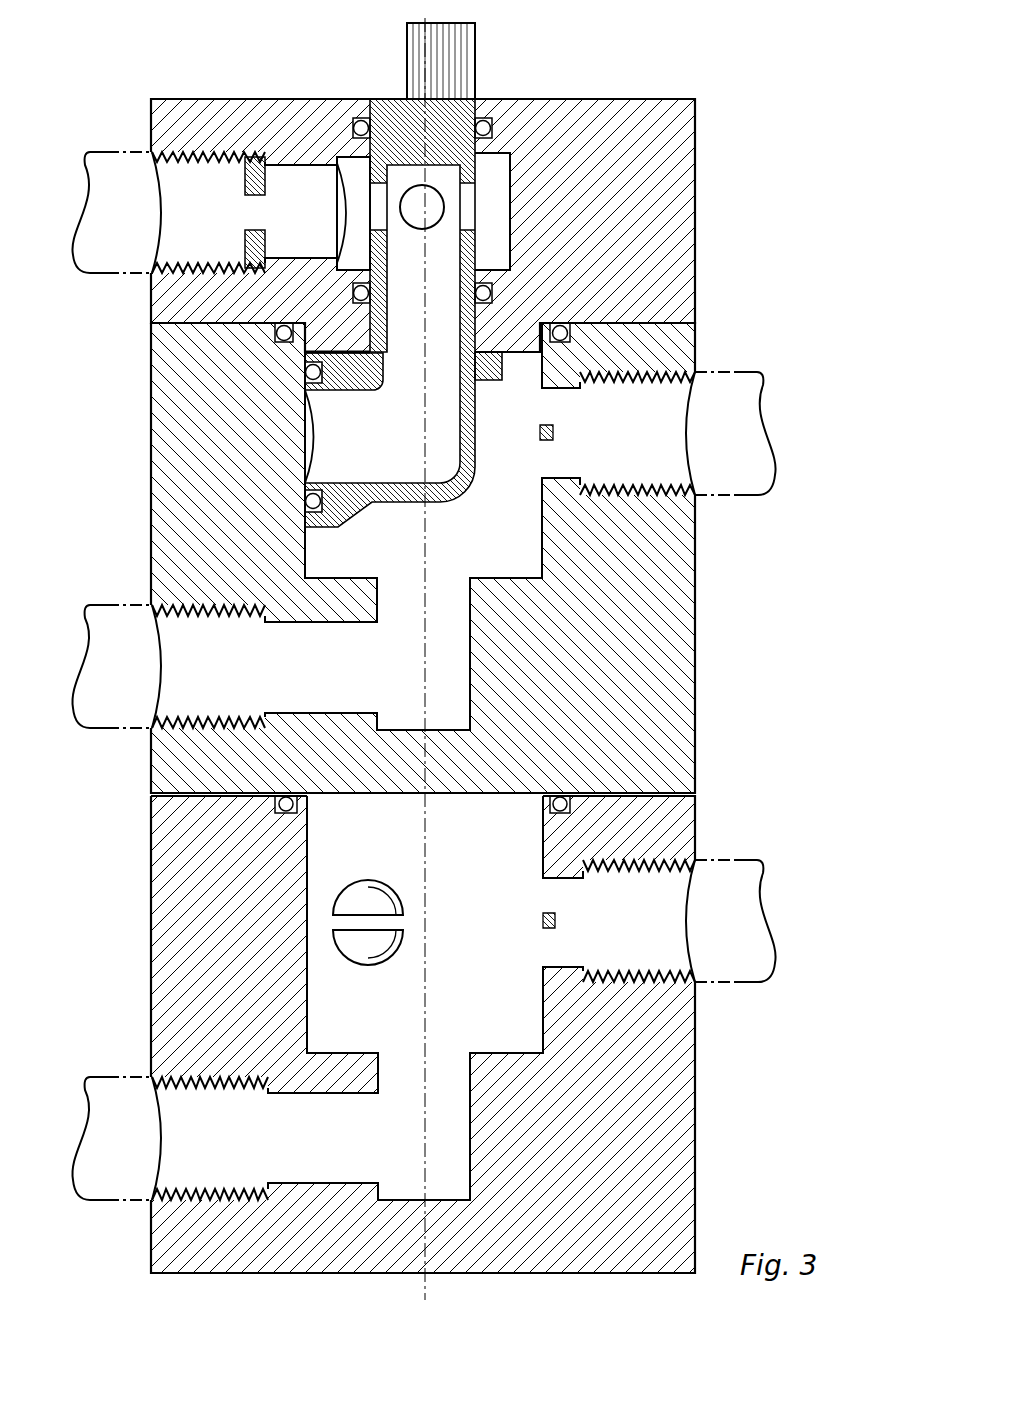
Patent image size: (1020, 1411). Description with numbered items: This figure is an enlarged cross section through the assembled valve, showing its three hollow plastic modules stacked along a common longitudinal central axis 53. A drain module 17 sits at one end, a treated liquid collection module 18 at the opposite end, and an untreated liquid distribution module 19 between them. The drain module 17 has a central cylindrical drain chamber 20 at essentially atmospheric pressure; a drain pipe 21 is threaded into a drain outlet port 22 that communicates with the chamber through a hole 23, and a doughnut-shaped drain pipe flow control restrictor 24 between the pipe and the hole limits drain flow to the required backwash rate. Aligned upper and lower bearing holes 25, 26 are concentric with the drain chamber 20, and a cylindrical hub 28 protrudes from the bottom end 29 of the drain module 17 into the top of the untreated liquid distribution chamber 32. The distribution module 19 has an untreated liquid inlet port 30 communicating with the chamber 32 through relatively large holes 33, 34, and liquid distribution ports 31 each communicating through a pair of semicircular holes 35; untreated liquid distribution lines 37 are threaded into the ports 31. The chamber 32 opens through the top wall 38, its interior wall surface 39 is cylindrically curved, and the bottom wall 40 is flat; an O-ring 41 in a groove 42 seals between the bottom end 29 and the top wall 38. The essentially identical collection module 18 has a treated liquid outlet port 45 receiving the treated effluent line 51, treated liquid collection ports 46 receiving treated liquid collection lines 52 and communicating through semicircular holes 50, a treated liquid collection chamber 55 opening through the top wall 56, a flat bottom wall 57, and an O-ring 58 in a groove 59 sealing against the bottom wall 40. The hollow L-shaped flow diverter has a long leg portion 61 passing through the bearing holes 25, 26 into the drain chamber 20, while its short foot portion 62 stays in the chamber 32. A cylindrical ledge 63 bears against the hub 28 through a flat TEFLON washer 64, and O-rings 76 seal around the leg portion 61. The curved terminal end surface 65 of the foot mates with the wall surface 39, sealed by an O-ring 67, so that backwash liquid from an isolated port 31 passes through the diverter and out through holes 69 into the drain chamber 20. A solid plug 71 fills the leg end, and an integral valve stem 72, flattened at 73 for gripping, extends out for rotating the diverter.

The drain module 17 is at (682, 150).
The treated liquid collection module 18 is at (665, 1115).
The untreated liquid distribution module 19 is at (655, 665).
The drain chamber 20 is at (353, 185).
The drain pipe 21 is at (120, 275).
The drain outlet port 22 is at (187, 163).
The hole 23 is at (288, 227).
The drain pipe flow control restrictor 24 is at (245, 180).
The upper bearing hole 25 is at (477, 170).
The lower bearing hole 26 is at (475, 323).
The hub 28 is at (510, 350).
The bottom end 29 is at (630, 322).
The untreated liquid inlet port 30 is at (193, 723).
The liquid distribution ports 31 is at (665, 495).
The untreated liquid distribution chamber 32 is at (453, 567).
The hole 33 is at (298, 677).
The hole 34 is at (398, 642).
The semicircular holes 35 is at (548, 467).
The untreated liquid distribution lines 37 is at (780, 490).
The top wall 38 is at (160, 320).
The interior wall surface 39 is at (305, 545).
The bottom wall 40 is at (225, 800).
The O-ring 41 is at (563, 340).
The groove 42 is at (570, 332).
The treated liquid outlet port 45 is at (168, 1200).
The treated liquid collection ports 46 is at (660, 985).
The semicircular holes 50 is at (375, 895).
The treated effluent line 51 is at (135, 1078).
The treated liquid collection lines 52 is at (740, 858).
The longitudinal central axis 53 is at (425, 1290).
The treated liquid collection chamber 55 is at (461, 882).
The top wall 56 is at (660, 785).
The bottom wall 57 is at (583, 1273).
The O-ring 58 is at (565, 805).
The groove 59 is at (548, 808).
The leg portion 61 is at (387, 297).
The foot portion 62 is at (335, 390).
The cylindrical ledge 63 is at (475, 365).
The flat washer 64 is at (337, 350).
The curved terminal end surface 65 is at (335, 464).
The O-ring 67 is at (305, 500).
The holes 69 is at (430, 203).
The solid plug 71 is at (385, 128).
The valve stem 72 is at (477, 25).
The flattened portion 73 is at (405, 35).
The O-rings 76 is at (490, 127).